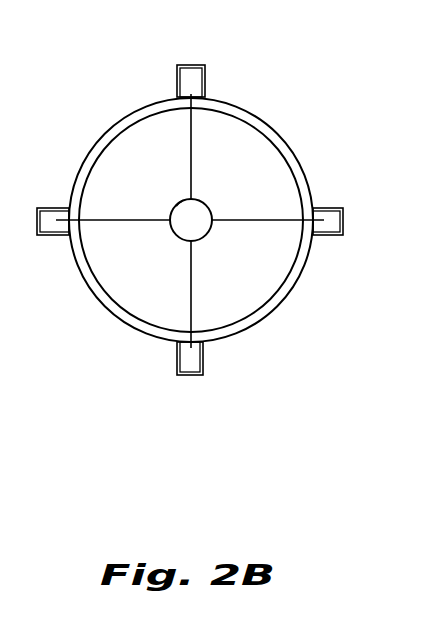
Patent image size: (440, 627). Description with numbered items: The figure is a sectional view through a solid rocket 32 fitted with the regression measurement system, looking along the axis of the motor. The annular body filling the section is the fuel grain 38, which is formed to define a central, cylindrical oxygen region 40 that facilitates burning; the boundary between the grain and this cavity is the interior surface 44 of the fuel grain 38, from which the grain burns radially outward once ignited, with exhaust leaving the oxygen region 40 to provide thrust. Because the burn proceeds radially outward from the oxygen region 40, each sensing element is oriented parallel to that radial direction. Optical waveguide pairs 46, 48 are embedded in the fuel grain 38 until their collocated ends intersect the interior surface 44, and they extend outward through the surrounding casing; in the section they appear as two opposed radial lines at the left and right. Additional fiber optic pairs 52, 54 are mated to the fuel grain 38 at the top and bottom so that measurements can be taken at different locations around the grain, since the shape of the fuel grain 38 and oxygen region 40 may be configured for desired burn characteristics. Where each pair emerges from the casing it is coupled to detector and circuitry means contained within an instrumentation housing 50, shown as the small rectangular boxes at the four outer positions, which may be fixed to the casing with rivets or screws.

The solid rocket 32 is at (303, 118).
The fuel grain 38 is at (155, 167).
The oxygen region 40 is at (193, 216).
The interior surface 44 is at (178, 206).
The optical waveguide pair 46 is at (273, 223).
The optical waveguide pair 48 is at (102, 218).
The instrumentation housing 50 is at (206, 80).
The fiber optic pair 52 is at (188, 133).
The fiber optic pair 54 is at (189, 312).